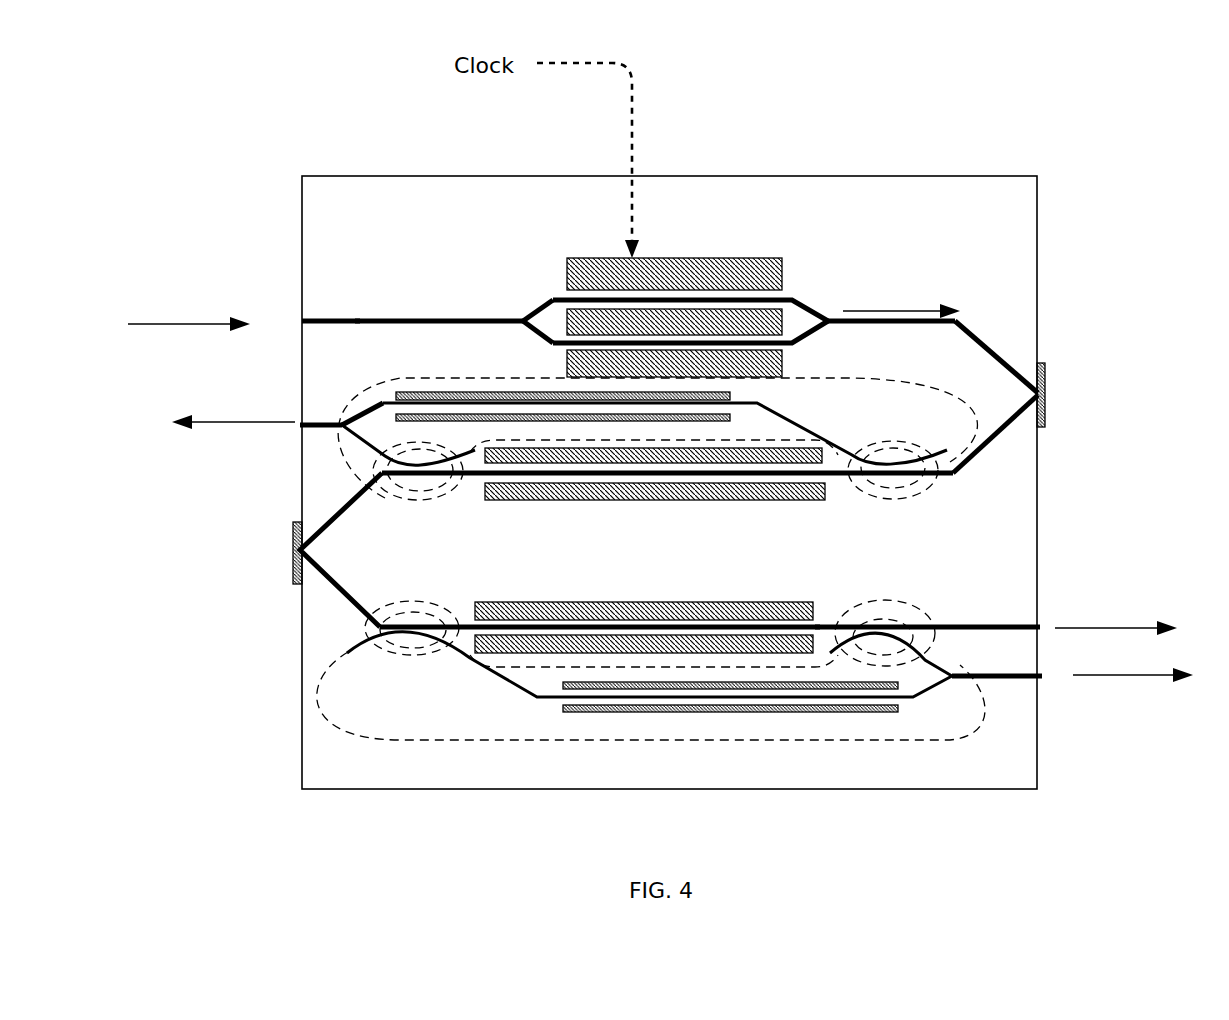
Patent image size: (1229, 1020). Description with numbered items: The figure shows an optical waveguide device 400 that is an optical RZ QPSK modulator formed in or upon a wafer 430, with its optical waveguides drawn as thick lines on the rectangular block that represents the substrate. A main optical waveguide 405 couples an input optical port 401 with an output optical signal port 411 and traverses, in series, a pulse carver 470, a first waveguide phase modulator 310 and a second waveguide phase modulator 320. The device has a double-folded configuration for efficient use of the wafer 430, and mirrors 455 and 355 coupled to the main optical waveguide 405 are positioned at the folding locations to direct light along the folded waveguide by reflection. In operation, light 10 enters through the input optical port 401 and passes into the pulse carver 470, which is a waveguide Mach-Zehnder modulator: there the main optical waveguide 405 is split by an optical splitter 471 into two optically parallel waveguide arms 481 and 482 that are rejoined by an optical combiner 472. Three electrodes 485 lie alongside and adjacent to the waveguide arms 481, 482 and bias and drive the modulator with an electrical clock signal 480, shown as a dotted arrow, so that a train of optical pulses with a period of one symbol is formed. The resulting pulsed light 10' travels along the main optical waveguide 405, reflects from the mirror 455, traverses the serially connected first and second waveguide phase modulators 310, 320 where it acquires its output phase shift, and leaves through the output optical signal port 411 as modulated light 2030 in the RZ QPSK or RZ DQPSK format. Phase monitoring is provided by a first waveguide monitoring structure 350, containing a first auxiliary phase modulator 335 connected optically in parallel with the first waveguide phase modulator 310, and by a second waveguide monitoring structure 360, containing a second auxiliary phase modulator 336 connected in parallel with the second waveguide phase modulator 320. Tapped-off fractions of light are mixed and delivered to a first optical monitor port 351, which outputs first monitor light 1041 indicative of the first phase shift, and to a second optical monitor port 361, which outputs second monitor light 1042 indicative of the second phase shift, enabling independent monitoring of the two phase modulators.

The light 10 is at (189, 290).
The optical waveguide device 400 is at (895, 176).
The input optical port 401 is at (300, 318).
The main optical waveguide 405 is at (432, 320).
The optical splitter 471 is at (520, 318).
The waveguide arm 481 is at (792, 296).
The waveguide arm 482 is at (562, 348).
The optical combiner 472 is at (840, 310).
The light 10' is at (901, 289).
The electrodes 485 is at (735, 255).
The pulse carver 470 is at (615, 250).
The electrical clock signal 480 is at (636, 115).
The wafer 430 is at (1012, 220).
The first auxiliary phase modulator 335 is at (420, 383).
The first waveguide monitoring structure 350 is at (858, 378).
The first optical monitor port 351 is at (298, 430).
The first monitor light 1041 is at (266, 421).
The first waveguide phase modulator 310 is at (752, 512).
The mirror 355 is at (298, 570).
The mirror 455 is at (1048, 390).
The second waveguide phase modulator 320 is at (750, 588).
The output optical signal port 411 is at (1040, 620).
The modulated light 2030 is at (1127, 625).
The second monitor light 1042 is at (1125, 680).
The second optical monitor port 361 is at (1040, 680).
The second auxiliary phase modulator 336 is at (808, 728).
The second waveguide monitoring structure 360 is at (617, 740).